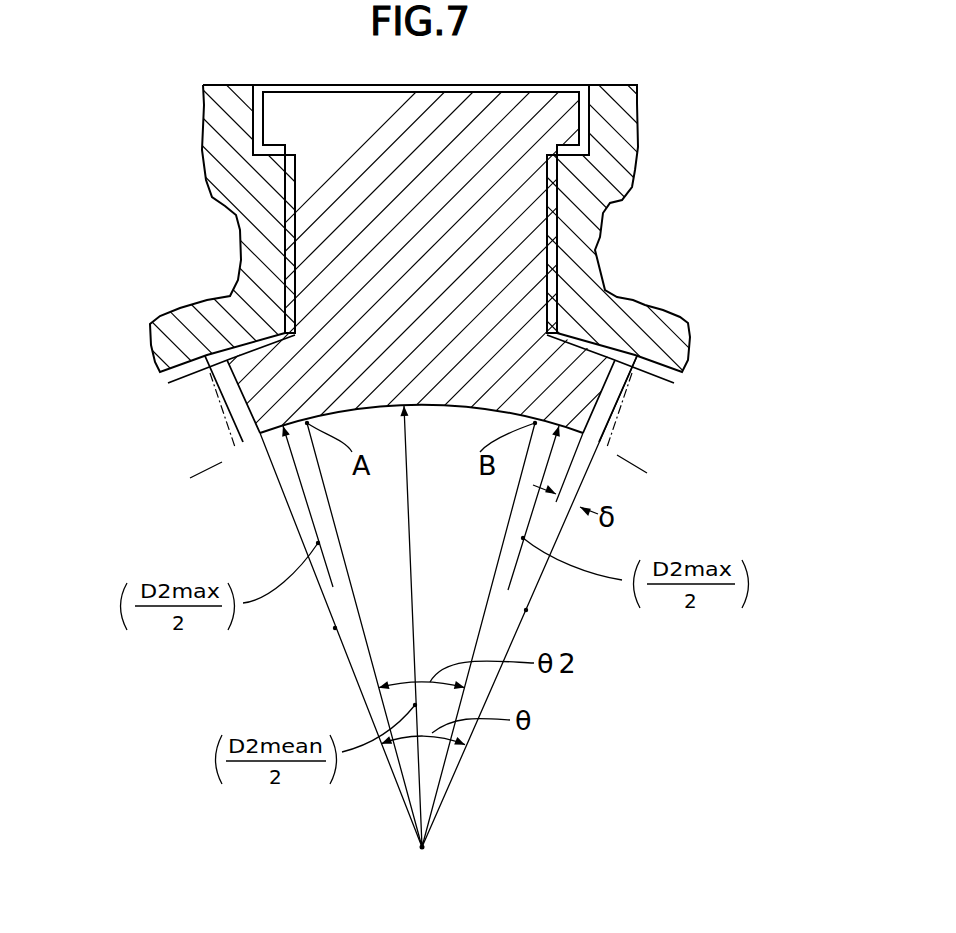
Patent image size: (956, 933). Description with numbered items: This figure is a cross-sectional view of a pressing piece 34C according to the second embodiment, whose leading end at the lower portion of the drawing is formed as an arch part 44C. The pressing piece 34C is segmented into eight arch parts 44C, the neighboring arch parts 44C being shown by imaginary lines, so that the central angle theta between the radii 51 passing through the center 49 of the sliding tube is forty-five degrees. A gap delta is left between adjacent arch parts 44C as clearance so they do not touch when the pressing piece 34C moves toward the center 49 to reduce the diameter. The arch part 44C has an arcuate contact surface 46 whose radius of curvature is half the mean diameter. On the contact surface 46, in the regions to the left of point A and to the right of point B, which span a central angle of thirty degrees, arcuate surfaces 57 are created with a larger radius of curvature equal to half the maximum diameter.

The pressing piece 34C is at (500, 248).
The arch part 44C is at (565, 362).
The contact surface 46 is at (440, 412).
The center 49 is at (424, 848).
The radius 51 is at (335, 628).
The arcuate surface 57 is at (235, 447).